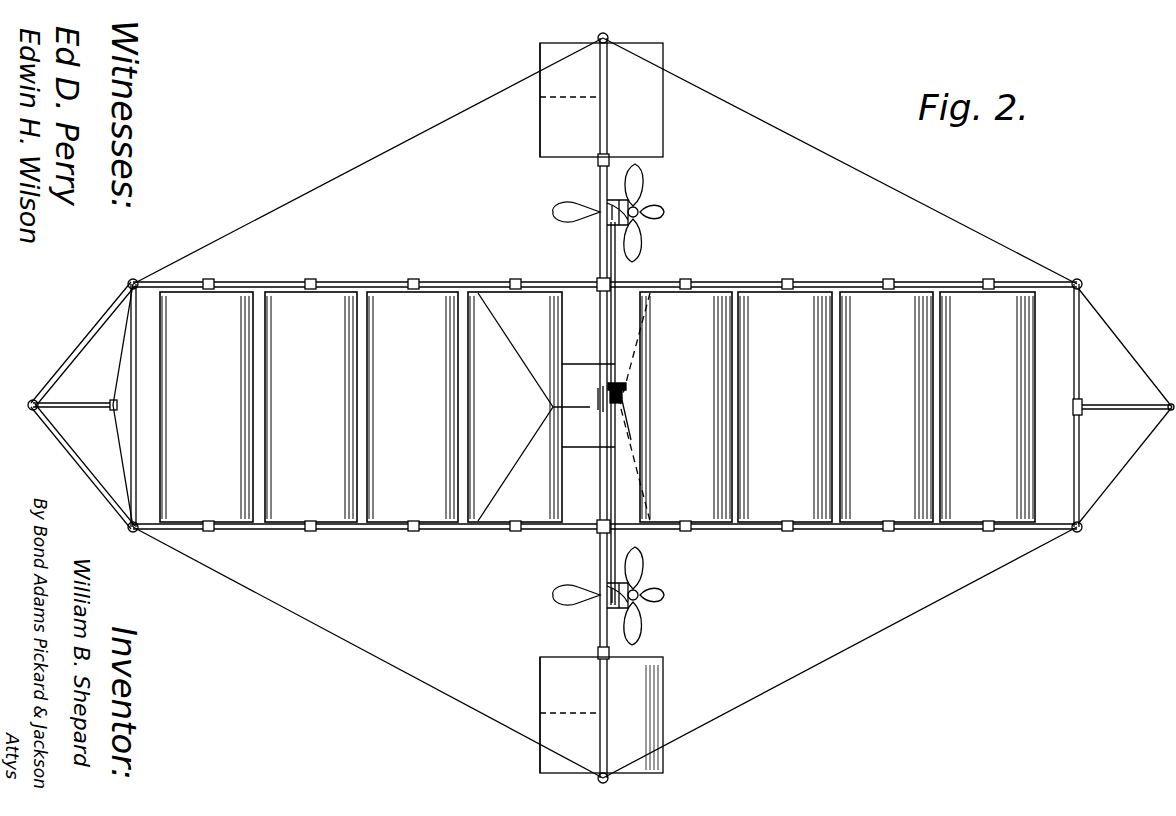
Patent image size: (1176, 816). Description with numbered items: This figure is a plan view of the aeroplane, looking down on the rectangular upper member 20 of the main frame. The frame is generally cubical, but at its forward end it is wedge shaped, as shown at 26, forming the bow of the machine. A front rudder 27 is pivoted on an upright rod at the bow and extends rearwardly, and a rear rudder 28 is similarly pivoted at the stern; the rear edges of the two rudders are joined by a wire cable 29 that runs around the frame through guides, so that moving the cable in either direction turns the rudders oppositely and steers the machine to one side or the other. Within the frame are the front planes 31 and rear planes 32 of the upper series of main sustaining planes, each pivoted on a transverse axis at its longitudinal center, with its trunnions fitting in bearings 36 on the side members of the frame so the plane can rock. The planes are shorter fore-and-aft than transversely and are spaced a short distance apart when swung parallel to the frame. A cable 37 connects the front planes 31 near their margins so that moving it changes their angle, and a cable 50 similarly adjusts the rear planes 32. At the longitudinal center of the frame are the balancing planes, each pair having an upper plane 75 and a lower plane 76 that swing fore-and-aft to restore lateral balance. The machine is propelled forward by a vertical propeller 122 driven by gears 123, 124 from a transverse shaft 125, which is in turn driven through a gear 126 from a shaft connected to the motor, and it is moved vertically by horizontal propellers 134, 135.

The upper member of the main frame 20 is at (381, 283).
The wedge-shaped forward end 26 is at (78, 358).
The front rudder 27 is at (88, 394).
The rear rudder 28 is at (1115, 402).
The wire cable 29 is at (119, 390).
The front planes of the upper series 31 is at (241, 300).
The rear planes of the upper series 32 is at (706, 300).
The bearings 36 is at (211, 271).
The cable 37 is at (432, 296).
The cable 50 is at (840, 282).
The upper balancing plane 75 is at (655, 152).
The lower balancing plane 76 is at (553, 155).
The vertical propeller 122 is at (640, 196).
The gear 123 is at (640, 212).
The gear 124 is at (610, 220).
The transverse shaft 125 is at (624, 397).
The gear 126 is at (624, 387).
The horizontal propeller 134 is at (560, 588).
The horizontal propeller 135 is at (553, 212).